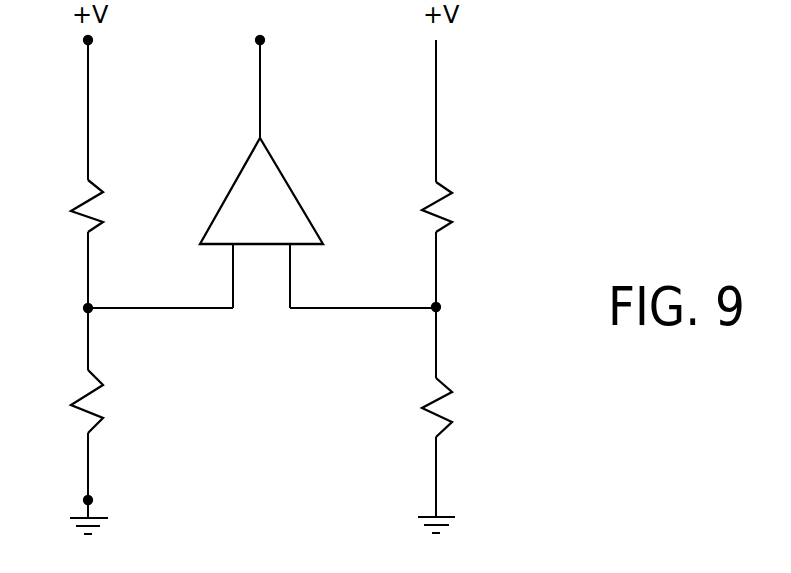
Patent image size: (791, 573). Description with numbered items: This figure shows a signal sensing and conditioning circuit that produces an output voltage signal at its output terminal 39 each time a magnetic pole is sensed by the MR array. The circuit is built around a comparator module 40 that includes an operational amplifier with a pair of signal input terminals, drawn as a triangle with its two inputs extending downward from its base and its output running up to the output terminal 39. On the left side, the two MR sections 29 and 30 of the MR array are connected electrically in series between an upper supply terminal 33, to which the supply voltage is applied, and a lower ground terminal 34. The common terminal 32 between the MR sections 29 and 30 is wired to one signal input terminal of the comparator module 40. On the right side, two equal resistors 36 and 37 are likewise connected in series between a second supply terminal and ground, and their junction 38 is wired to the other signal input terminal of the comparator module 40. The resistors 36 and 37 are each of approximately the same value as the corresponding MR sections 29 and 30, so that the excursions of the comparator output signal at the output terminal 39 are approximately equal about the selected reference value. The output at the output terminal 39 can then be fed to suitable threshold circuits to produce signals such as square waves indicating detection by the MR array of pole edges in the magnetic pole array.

The MR section 29 is at (70, 206).
The MR section 30 is at (69, 401).
The common terminal 32 is at (71, 309).
The supply terminal 33 is at (70, 45).
The ground terminal 34 is at (70, 501).
The resistor 36 is at (454, 207).
The resistor 37 is at (454, 407).
The junction 38 is at (455, 309).
The output terminal 39 is at (278, 45).
The comparator module 40 is at (290, 217).